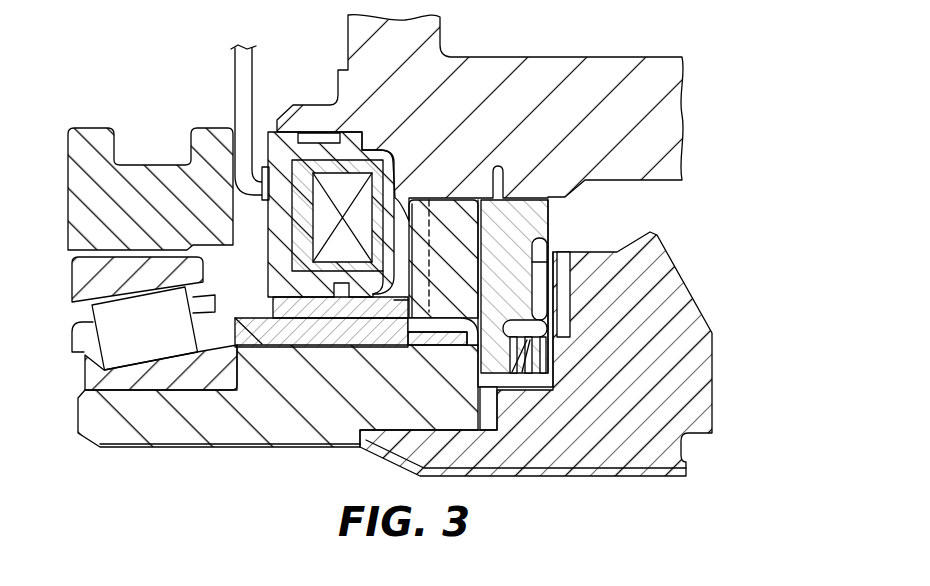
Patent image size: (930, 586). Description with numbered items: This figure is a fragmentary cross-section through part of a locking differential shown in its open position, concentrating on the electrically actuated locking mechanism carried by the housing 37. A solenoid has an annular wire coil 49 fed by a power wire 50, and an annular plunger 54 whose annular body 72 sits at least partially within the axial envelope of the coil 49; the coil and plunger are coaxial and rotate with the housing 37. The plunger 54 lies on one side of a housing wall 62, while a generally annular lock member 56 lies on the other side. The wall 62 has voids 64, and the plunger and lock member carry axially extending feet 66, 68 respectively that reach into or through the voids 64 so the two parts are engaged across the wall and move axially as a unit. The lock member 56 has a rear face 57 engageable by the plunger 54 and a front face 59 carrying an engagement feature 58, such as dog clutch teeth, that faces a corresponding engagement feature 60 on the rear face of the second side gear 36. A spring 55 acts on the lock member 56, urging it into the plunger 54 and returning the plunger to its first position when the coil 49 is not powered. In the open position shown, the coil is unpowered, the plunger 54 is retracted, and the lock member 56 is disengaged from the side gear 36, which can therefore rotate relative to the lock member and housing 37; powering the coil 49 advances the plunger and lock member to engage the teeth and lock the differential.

The second side gear 36 is at (693, 405).
The housing 37 is at (528, 83).
The annular wire coil 49 is at (337, 196).
The power wire 50 is at (235, 75).
The plunger 54 is at (266, 355).
The spring 55 is at (527, 340).
The lock member 56 is at (520, 230).
The rear face 57 is at (409, 221).
The engagement feature 58 is at (540, 262).
The front face 59 is at (550, 231).
The engagement feature 60 is at (560, 303).
The housing wall 62 is at (430, 312).
The voids 64 is at (398, 320).
The feet 66 is at (368, 336).
The feet 68 is at (452, 228).
The annular body 72 is at (322, 312).